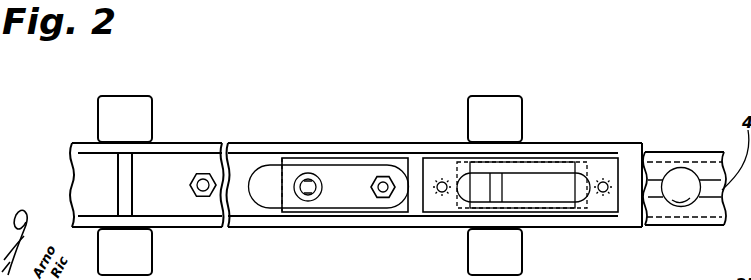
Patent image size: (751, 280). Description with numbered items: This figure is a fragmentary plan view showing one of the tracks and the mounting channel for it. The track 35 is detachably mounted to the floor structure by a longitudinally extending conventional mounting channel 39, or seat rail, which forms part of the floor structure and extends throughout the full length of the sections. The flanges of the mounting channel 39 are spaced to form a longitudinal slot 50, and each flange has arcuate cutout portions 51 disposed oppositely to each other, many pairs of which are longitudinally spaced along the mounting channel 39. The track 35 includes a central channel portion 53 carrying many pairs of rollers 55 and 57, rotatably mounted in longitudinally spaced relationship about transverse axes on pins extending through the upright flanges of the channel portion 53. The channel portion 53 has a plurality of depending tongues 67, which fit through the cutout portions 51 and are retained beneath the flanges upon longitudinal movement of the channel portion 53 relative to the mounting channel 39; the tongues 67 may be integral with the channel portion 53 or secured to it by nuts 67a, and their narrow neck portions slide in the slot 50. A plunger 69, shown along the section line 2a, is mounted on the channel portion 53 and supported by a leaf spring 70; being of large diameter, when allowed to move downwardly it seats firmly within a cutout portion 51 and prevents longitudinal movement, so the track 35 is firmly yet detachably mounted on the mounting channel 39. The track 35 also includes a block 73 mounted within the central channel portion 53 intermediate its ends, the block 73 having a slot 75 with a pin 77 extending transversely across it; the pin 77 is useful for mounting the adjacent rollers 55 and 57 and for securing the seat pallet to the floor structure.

The section line 2a is at (262, 187).
The track 35 is at (352, 135).
The mounting channel 39 is at (682, 148).
The longitudinal slot 50 is at (708, 193).
The cutout portions 51 is at (683, 167).
The channel portion 53 is at (440, 139).
The roller 55 is at (140, 257).
The roller 57 is at (140, 118).
The depending tongues 67 is at (190, 189).
The nuts 67a is at (203, 172).
The plunger 69 is at (307, 197).
The leaf spring 70 is at (273, 167).
The block 73 is at (455, 149).
The slot 75 is at (546, 187).
The pin 77 is at (505, 183).